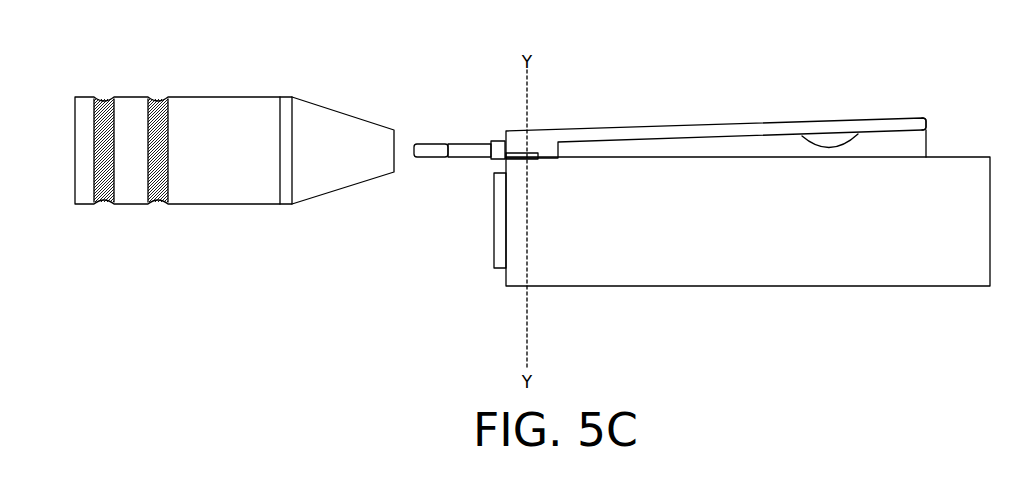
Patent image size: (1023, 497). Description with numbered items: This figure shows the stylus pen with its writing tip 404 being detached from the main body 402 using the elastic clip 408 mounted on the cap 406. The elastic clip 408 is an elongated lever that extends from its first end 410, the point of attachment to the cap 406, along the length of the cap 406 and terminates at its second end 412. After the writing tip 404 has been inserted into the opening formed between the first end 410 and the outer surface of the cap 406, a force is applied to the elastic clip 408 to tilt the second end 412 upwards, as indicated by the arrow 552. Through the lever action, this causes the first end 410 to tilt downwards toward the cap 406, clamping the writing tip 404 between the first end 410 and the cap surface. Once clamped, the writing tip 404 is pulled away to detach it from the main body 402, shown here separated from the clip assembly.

The main body 402 is at (223, 97).
The writing tip 404 is at (437, 144).
The cap 406 is at (845, 288).
The elastic clip 408 is at (698, 125).
The first end 410 is at (558, 101).
The second end 412 is at (911, 88).
The upward tilting direction 552 is at (946, 137).